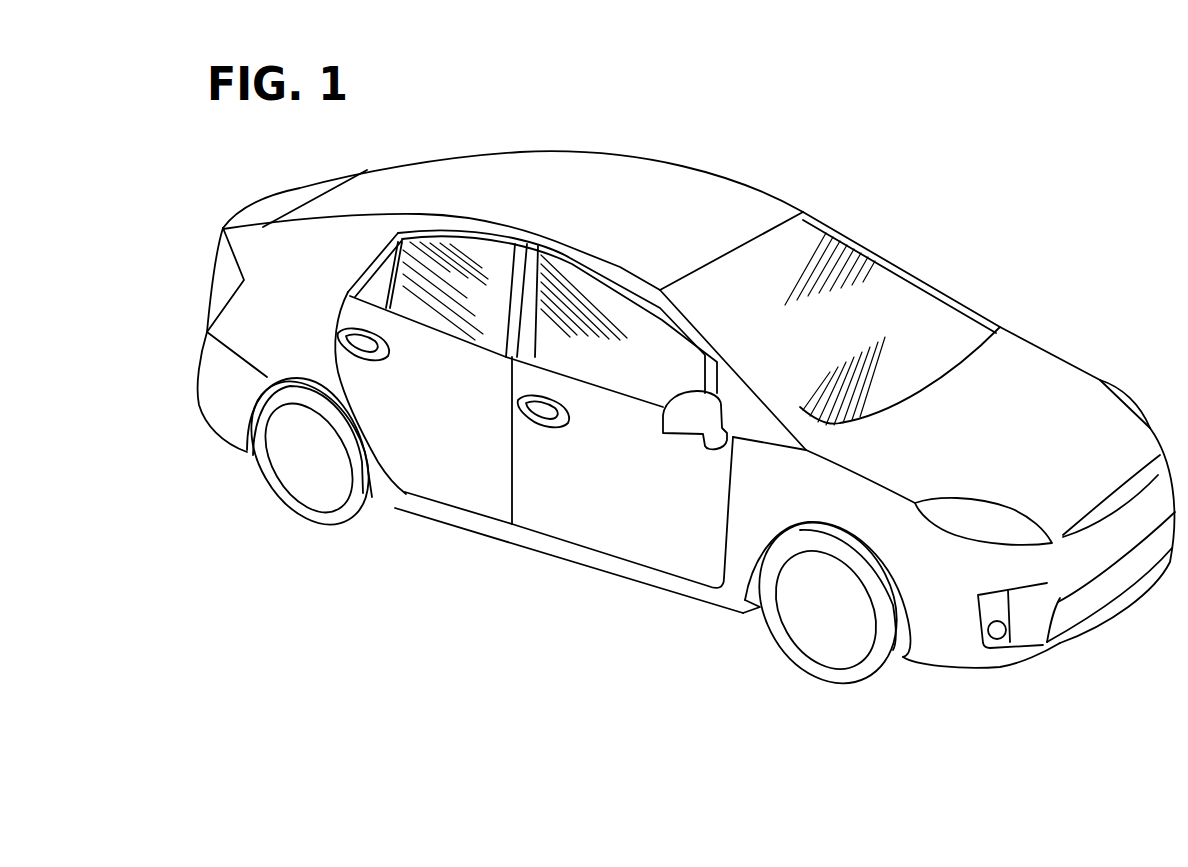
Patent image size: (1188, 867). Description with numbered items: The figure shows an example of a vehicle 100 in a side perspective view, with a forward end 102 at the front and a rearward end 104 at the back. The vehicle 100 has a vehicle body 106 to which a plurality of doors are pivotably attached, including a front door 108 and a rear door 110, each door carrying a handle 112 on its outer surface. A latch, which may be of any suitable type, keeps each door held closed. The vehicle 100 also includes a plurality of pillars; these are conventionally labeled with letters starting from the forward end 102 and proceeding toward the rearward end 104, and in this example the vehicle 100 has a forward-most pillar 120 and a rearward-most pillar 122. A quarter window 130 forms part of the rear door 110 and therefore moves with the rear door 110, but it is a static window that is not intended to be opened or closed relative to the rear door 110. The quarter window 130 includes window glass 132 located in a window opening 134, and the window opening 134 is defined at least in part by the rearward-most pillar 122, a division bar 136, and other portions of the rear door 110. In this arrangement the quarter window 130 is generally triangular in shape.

The vehicle 100 is at (990, 248).
The forward end 102 is at (1128, 632).
The rearward end 104 is at (237, 183).
The vehicle body 106 is at (732, 597).
The front door 108 is at (625, 530).
The rear door 110 is at (467, 487).
The handle 112 is at (392, 345).
The forward-most pillar 120 is at (750, 385).
The rearward-most pillar 122 is at (397, 225).
The quarter window 130 is at (382, 282).
The window glass 132 is at (348, 292).
The window opening 134 is at (372, 258).
The division bar 136 is at (440, 260).